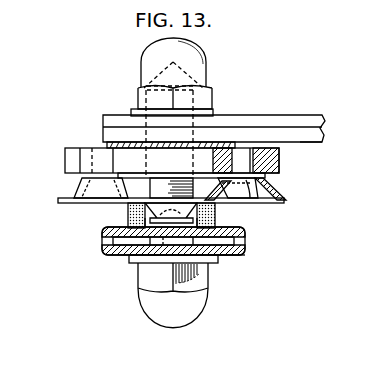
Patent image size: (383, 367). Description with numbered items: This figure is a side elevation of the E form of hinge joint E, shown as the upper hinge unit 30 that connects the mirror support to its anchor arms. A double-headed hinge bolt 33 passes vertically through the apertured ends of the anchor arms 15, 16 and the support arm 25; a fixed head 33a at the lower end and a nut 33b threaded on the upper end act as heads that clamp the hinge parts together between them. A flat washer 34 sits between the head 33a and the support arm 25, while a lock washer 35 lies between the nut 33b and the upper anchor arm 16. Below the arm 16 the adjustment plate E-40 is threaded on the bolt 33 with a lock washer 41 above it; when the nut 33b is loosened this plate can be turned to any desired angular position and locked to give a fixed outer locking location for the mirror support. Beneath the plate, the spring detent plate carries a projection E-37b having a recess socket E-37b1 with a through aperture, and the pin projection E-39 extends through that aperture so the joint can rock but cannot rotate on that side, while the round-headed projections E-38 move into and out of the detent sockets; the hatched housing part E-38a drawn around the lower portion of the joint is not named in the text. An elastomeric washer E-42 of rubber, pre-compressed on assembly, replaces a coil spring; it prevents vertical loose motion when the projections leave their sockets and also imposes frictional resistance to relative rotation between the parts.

The E form hinge joint E is at (102, 82).
The upper hinge unit 30 is at (143, 54).
The nut 33b is at (208, 71).
The hinge bolt 33 is at (194, 97).
The lock washer 35 is at (131, 110).
The upper anchor arm 16 is at (256, 115).
The anchor arm 15 is at (309, 130).
The lock washer 41 is at (107, 143).
The adjustment plate E-40 is at (73, 148).
The projection of spring detent plate E-37b is at (256, 194).
The recess socket E-37b1 is at (243, 203).
The pin projection E-39 is at (216, 204).
The elastomeric washer E-42 is at (128, 209).
The round-headed projection E-38 is at (152, 220).
The housing E-38a is at (238, 229).
The flat washer 34 is at (129, 262).
The support arm 25 is at (237, 258).
The head 33a is at (199, 318).